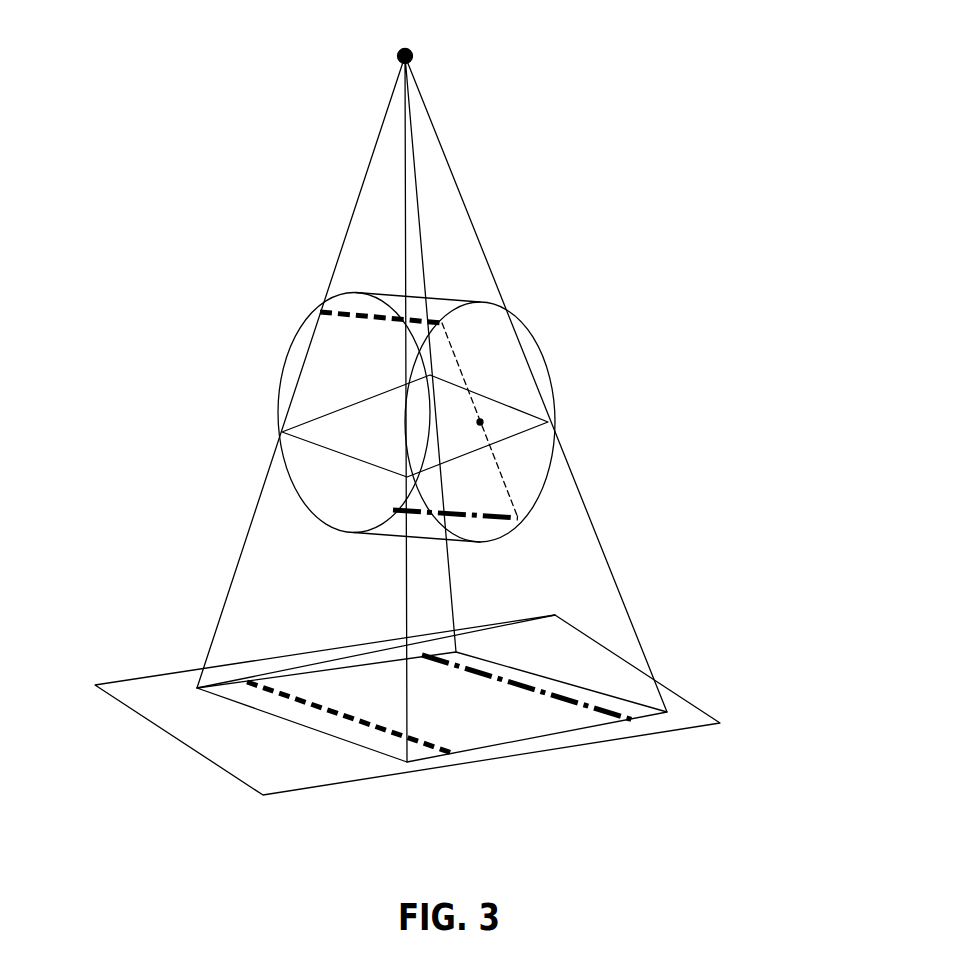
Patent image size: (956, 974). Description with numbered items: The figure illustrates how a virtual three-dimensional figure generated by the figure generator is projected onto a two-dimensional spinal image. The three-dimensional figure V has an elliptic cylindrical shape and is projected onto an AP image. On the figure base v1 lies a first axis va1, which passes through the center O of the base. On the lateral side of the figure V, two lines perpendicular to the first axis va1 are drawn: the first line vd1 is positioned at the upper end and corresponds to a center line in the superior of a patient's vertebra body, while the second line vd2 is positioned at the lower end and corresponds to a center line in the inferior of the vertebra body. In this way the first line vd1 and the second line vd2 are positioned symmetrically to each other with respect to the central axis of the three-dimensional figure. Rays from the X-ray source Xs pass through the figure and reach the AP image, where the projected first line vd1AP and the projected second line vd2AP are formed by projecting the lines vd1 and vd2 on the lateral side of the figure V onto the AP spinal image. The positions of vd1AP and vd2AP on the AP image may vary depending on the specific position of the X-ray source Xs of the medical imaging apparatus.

The X-ray source Xs is at (423, 60).
The 3D figure V is at (533, 323).
The 3D figure base v1 is at (533, 462).
The first axis va1 is at (463, 375).
The center O is at (492, 422).
The first line vd1 is at (338, 310).
The second line vd2 is at (497, 511).
The projected first line vd1AP is at (350, 723).
The projected second line vd2AP is at (575, 697).
The element AP image is at (683, 728).